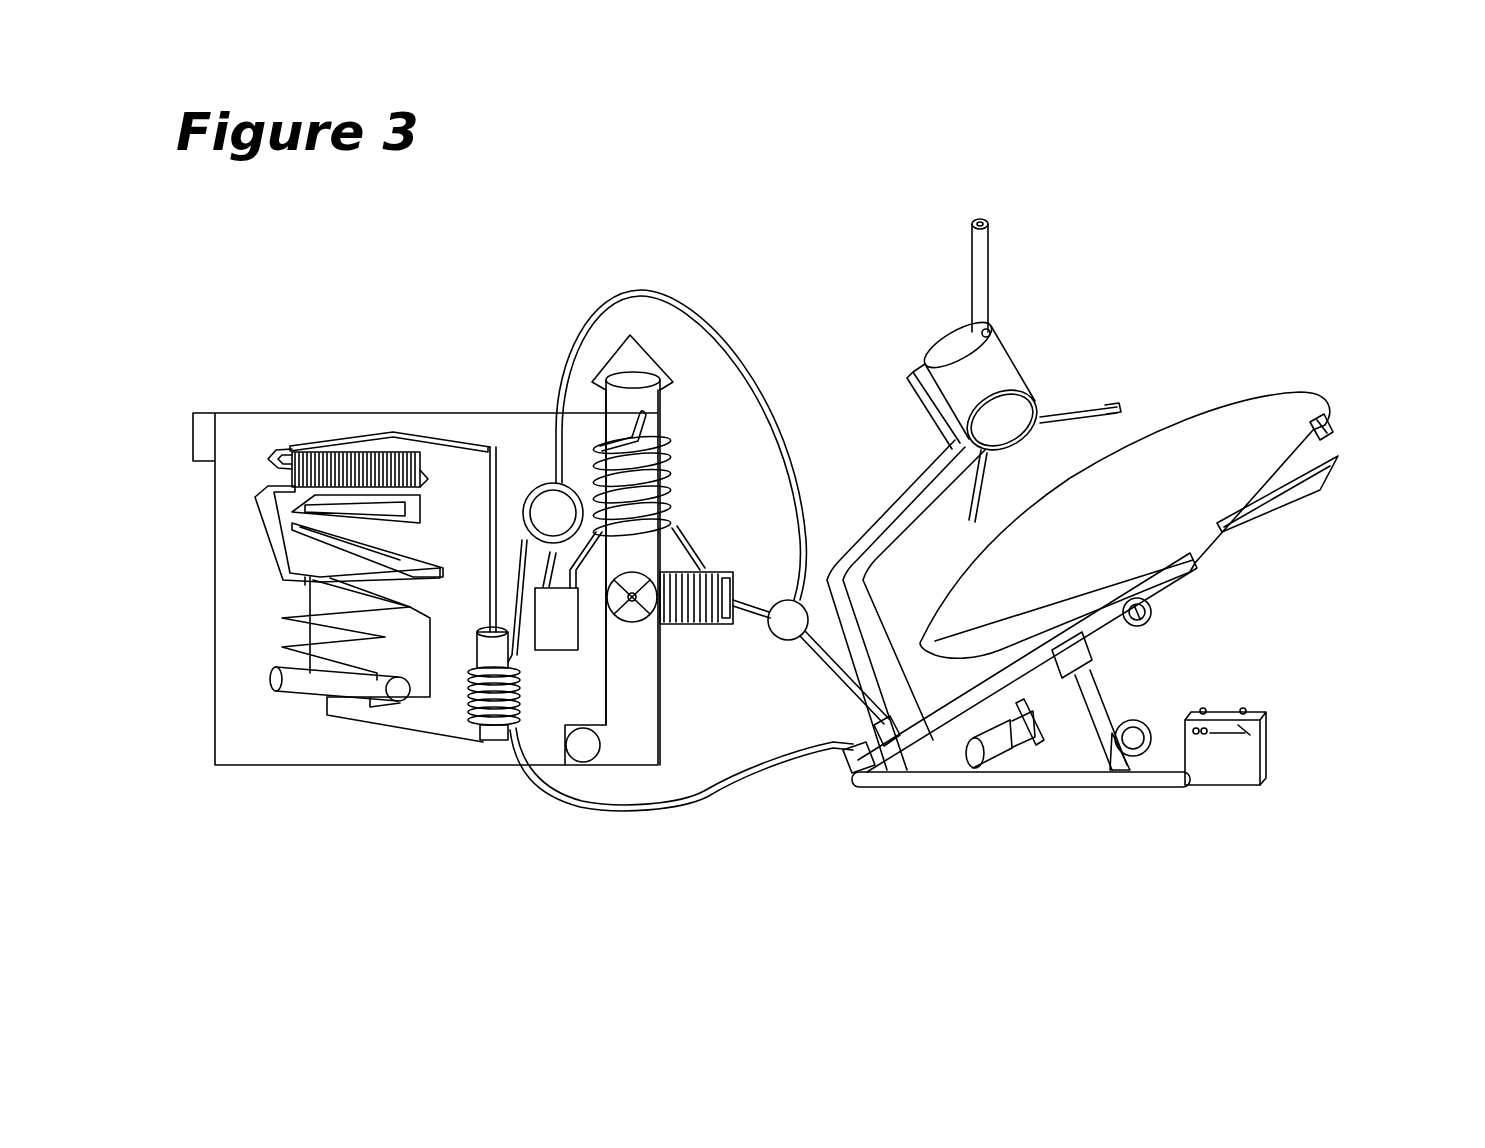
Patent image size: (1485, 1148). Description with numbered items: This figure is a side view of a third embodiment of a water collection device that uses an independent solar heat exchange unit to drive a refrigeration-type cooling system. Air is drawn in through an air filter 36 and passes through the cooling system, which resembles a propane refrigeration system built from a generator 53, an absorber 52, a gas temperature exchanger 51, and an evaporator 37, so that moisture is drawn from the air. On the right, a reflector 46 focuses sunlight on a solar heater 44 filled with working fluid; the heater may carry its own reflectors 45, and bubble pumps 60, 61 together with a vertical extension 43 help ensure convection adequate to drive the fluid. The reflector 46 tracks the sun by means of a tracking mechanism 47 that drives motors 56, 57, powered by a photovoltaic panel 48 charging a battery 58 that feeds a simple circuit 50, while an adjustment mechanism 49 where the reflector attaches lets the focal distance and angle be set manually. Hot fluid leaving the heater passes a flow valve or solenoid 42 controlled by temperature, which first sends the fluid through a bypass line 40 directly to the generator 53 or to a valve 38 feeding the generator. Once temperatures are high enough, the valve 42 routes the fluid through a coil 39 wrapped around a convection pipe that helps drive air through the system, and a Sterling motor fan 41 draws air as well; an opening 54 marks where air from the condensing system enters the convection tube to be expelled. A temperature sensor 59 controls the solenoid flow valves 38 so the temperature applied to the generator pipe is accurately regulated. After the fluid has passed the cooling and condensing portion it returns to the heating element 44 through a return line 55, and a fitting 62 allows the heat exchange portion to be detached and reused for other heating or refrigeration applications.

The air filter 36 is at (193, 413).
The evaporator 37 is at (307, 440).
The valve 38 is at (607, 443).
The coil 39 is at (547, 507).
The bypass line 40 is at (752, 388).
The Sterling motor fan 41 is at (707, 567).
The flow valve or solenoid 42 is at (788, 640).
The vertical extension 43 is at (990, 275).
The solar heater 44 is at (1017, 380).
The reflectors 45 is at (1117, 410).
The reflector 46 is at (1260, 430).
The tracking mechanism 47 is at (1323, 427).
The photovoltaic panel 48 is at (1317, 485).
The adjustment mechanism 49 is at (1153, 610).
The circuit 50 is at (1238, 720).
The gas temperature exchanger 51 is at (275, 557).
The absorber 52 is at (268, 688).
The generator 53 is at (470, 713).
The opening 54 is at (572, 748).
The return line 55 is at (717, 807).
The motor 56 is at (982, 752).
The motor 57 is at (1133, 763).
The battery 58 is at (1220, 775).
The temperature sensor 59 is at (575, 628).
The bubble pump 60 is at (960, 327).
The bubble pump 61 is at (975, 220).
The fitting 62 is at (840, 767).